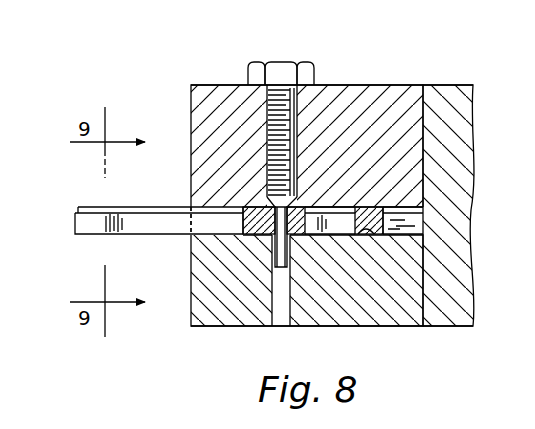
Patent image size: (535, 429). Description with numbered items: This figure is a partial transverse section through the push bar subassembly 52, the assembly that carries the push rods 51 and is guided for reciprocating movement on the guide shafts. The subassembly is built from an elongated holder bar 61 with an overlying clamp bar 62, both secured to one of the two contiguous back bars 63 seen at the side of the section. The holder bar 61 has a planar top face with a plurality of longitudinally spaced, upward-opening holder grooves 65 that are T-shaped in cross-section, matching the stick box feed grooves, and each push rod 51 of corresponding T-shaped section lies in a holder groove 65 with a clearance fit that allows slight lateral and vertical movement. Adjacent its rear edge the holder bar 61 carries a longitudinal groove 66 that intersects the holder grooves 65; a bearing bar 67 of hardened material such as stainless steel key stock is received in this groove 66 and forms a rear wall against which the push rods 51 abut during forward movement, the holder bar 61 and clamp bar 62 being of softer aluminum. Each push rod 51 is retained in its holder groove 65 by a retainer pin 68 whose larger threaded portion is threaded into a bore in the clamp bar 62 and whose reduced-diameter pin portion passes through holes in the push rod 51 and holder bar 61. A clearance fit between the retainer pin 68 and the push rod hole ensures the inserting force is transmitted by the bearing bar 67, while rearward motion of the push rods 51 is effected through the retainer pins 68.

The push rod 51 is at (132, 218).
The push bar subassembly 52 is at (405, 83).
The holder bar 61 is at (198, 268).
The clamp bar 62 is at (200, 105).
The back bar 63 is at (457, 122).
The holder groove 65 is at (407, 229).
The longitudinal groove 66 is at (378, 236).
The bearing bar 67 is at (380, 205).
The retainer pin 68 is at (278, 97).